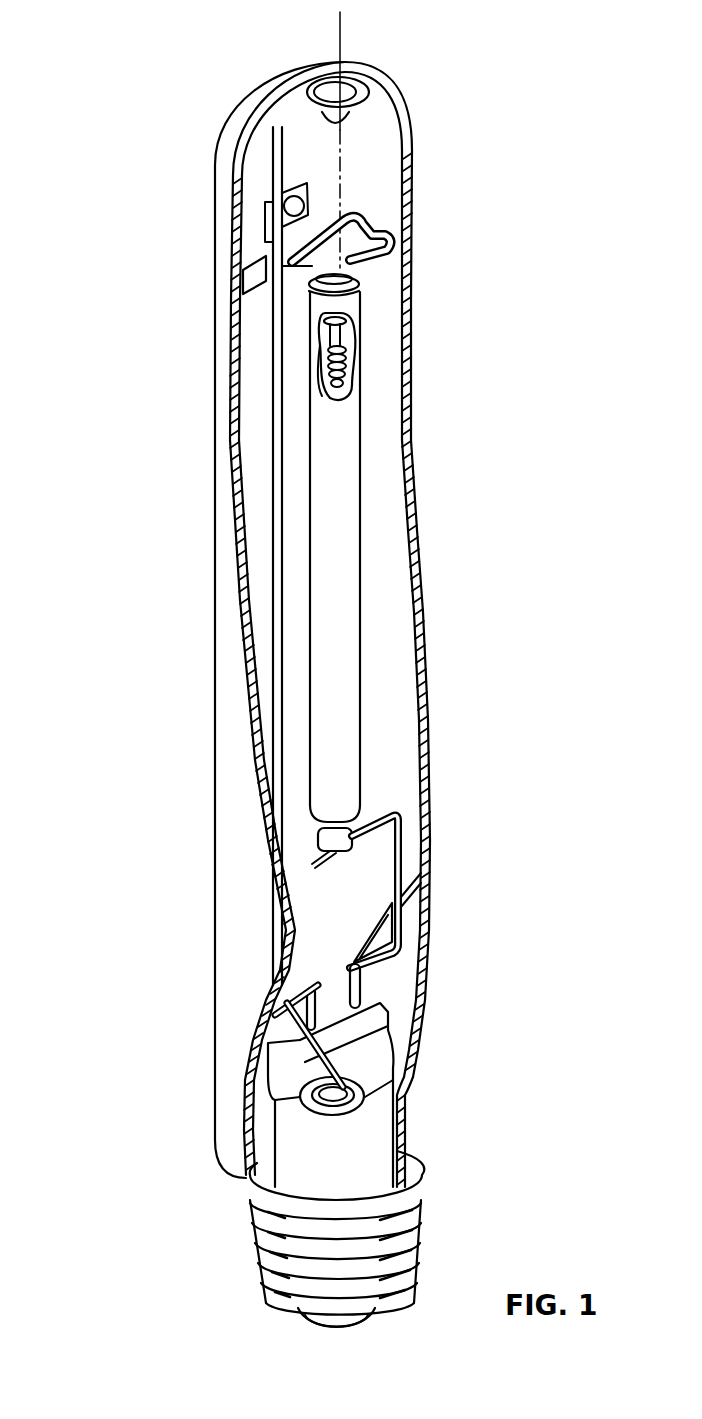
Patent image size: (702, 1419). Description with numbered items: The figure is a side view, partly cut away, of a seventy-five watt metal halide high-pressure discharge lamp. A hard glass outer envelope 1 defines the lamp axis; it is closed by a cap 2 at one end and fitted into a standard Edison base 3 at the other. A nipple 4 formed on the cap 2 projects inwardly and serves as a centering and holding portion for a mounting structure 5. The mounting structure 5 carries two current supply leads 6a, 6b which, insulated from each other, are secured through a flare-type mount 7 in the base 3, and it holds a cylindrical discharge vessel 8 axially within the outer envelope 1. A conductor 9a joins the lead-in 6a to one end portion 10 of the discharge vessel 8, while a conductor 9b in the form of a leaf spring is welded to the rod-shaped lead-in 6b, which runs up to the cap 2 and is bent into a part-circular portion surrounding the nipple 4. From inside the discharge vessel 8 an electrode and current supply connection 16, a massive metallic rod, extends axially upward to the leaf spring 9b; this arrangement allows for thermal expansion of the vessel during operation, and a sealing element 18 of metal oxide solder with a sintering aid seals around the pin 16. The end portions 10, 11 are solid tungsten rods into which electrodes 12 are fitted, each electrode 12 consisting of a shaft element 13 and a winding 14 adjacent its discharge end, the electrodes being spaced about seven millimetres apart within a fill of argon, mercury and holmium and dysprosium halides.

The outer envelope 1 is at (213, 640).
The cap 2 is at (272, 83).
The Edison base 3 is at (225, 1248).
The nipple 4 is at (335, 122).
The mounting structure 5 is at (403, 953).
The current supply lead 6a is at (362, 993).
The current supply lead 6b is at (310, 1018).
The flare-type mount 7 is at (352, 1142).
The discharge vessel 8 is at (365, 610).
The conductor 9a is at (405, 853).
The leaf spring 9b is at (380, 214).
The end portion 10 is at (300, 840).
The end portion 11 is at (346, 320).
The electrode 12 is at (310, 378).
The shaft element 13 is at (330, 345).
The winding 14 is at (350, 372).
The electrode and current supply connection 16 is at (345, 273).
The sealing element 18 is at (310, 292).